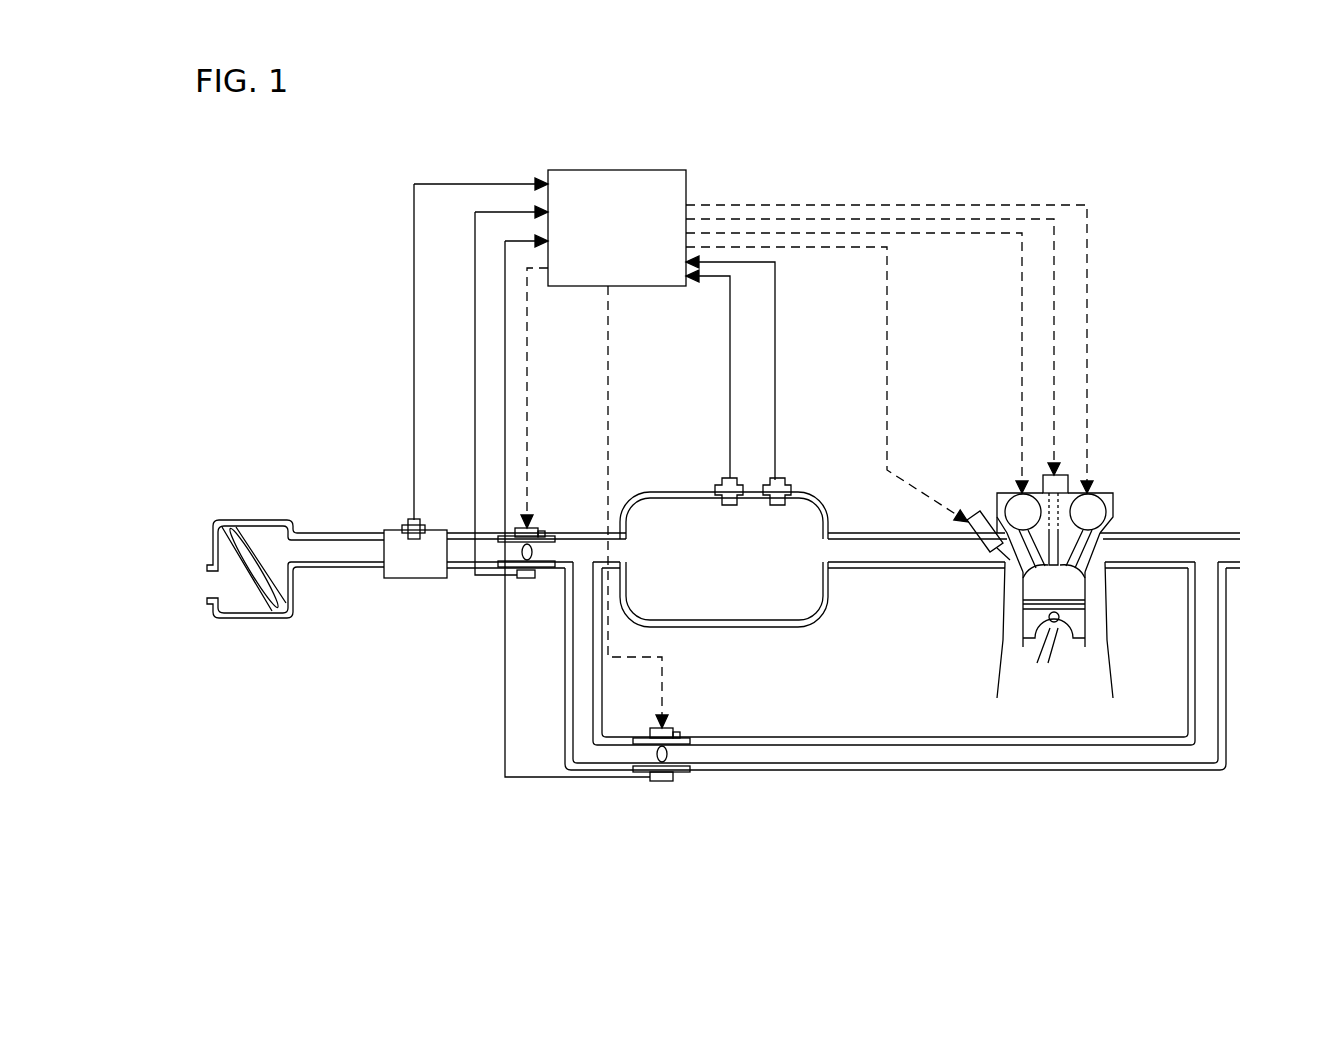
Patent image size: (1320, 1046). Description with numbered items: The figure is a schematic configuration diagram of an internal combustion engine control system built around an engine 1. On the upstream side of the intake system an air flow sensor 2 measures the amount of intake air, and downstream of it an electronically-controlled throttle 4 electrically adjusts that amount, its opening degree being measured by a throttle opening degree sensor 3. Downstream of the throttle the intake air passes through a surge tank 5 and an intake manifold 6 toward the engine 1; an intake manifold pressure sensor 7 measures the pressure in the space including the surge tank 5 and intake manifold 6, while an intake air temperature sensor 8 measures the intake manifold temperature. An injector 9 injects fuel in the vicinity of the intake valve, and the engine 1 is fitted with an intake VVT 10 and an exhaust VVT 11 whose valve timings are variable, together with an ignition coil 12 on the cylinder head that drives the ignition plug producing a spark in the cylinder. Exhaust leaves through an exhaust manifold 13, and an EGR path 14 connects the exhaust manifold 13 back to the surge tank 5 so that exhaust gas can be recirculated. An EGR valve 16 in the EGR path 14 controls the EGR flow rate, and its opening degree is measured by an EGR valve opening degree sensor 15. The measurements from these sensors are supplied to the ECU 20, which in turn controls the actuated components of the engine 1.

The engine 1 is at (1100, 600).
The air flow sensor 2 is at (396, 520).
The throttle opening degree sensor 3 is at (520, 582).
The electronically-controlled throttle 4 is at (536, 527).
The surge tank 5 is at (752, 605).
The intake manifold 6 is at (900, 550).
The intake manifold pressure sensor 7 is at (715, 486).
The intake air temperature sensor 8 is at (783, 482).
The injector 9 is at (975, 540).
The intake VVT 10 is at (1005, 490).
The exhaust VVT 11 is at (1097, 510).
The ignition coil 12 is at (1062, 490).
The exhaust manifold 13 is at (1168, 545).
The EGR path 14 is at (993, 750).
The EGR valve opening degree sensor 15 is at (648, 783).
The EGR valve 16 is at (677, 735).
The ECU 20 is at (658, 203).